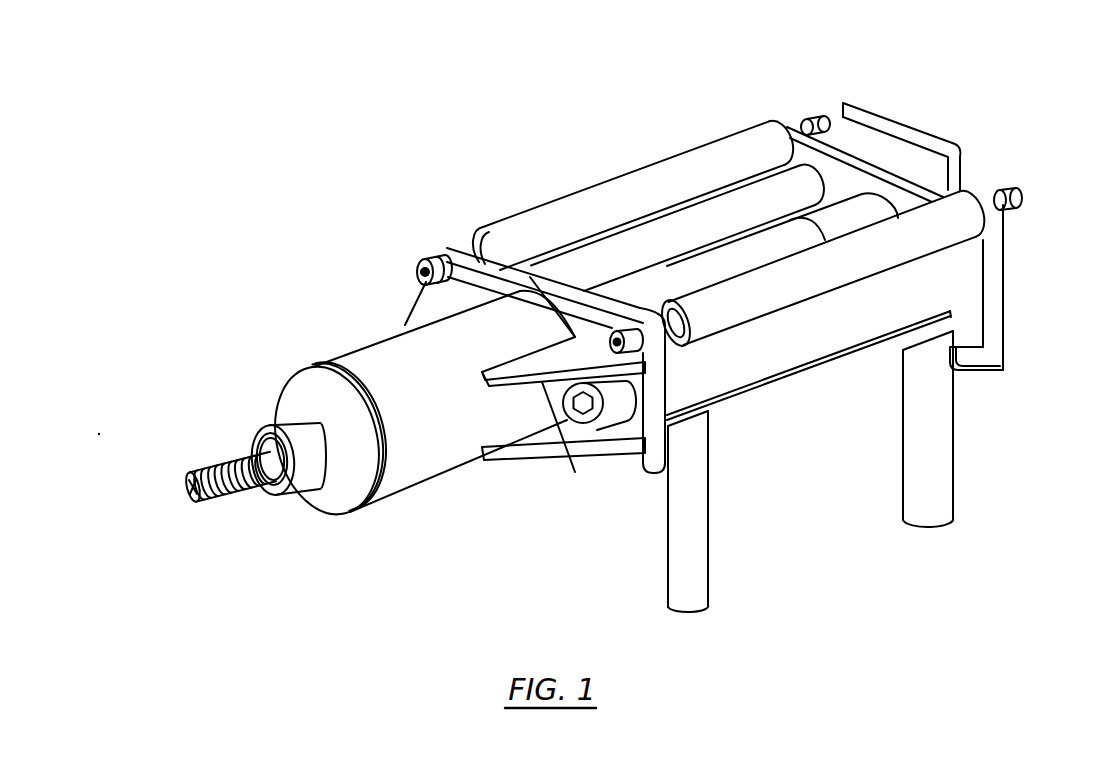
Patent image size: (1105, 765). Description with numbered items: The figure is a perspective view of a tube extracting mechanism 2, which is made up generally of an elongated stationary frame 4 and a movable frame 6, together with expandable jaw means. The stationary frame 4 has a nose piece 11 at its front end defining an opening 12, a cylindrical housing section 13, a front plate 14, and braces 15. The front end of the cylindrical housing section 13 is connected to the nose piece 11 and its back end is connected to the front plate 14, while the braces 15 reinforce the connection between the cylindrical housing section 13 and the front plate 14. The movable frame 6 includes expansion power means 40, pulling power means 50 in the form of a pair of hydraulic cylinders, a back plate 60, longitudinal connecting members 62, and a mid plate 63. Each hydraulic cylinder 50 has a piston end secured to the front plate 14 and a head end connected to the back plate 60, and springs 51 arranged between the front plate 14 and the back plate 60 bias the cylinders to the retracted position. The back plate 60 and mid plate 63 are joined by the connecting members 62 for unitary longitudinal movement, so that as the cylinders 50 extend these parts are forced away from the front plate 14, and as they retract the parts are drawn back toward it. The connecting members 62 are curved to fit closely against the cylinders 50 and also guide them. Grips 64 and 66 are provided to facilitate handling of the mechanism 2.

The tube extracting mechanism 2 is at (598, 114).
The stationary frame 4 is at (283, 284).
The movable frame 6 is at (676, 122).
The nose piece 11 is at (287, 430).
The opening 12 is at (258, 448).
The cylindrical housing section 13 is at (427, 488).
The front plate 14 is at (443, 256).
The braces 15 is at (425, 312).
The expansion power means 40 is at (683, 262).
The pulling power means 50 is at (747, 370).
The springs 51 is at (530, 208).
The back plate 60 is at (993, 277).
The longitudinal connecting member 62 is at (607, 243).
The mid plate 63 is at (510, 260).
The grip 64 is at (698, 567).
The grip 66 is at (947, 471).